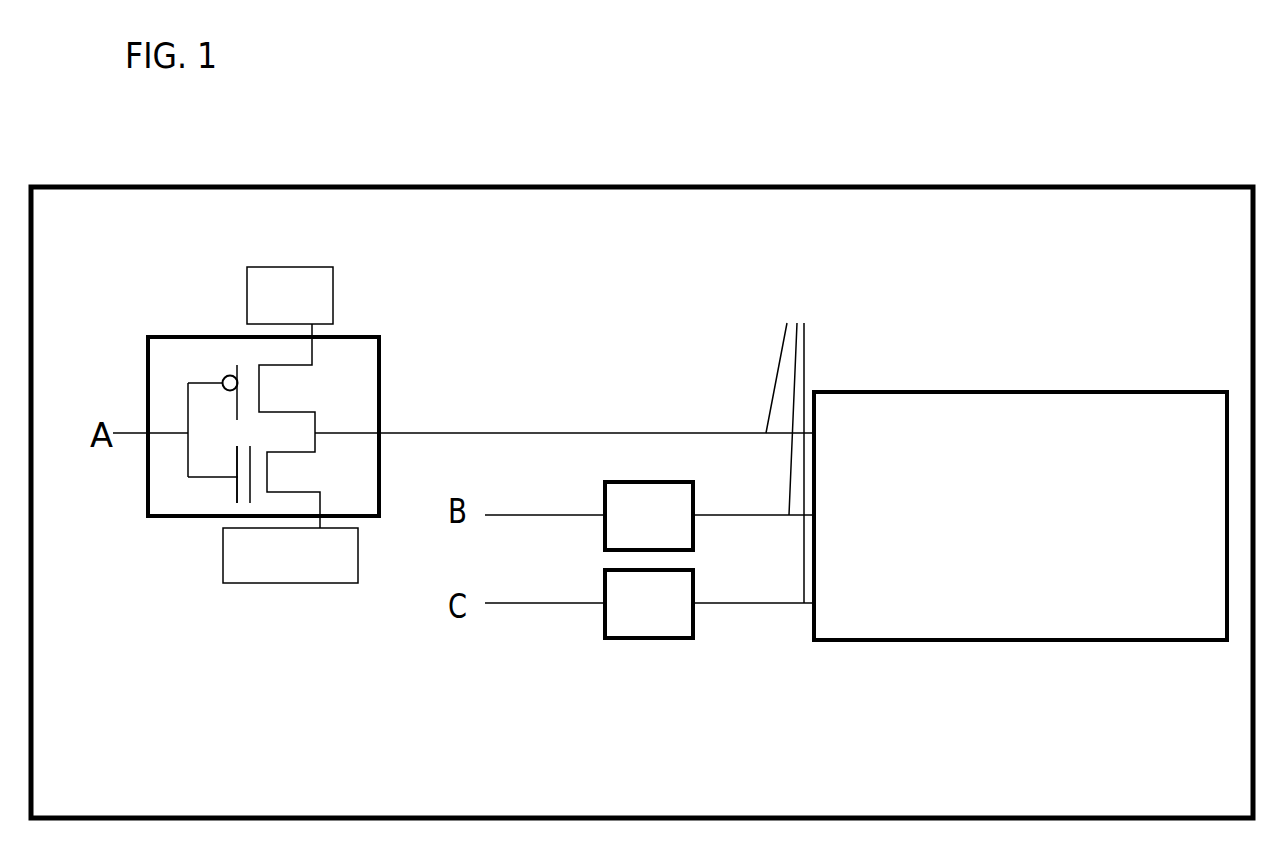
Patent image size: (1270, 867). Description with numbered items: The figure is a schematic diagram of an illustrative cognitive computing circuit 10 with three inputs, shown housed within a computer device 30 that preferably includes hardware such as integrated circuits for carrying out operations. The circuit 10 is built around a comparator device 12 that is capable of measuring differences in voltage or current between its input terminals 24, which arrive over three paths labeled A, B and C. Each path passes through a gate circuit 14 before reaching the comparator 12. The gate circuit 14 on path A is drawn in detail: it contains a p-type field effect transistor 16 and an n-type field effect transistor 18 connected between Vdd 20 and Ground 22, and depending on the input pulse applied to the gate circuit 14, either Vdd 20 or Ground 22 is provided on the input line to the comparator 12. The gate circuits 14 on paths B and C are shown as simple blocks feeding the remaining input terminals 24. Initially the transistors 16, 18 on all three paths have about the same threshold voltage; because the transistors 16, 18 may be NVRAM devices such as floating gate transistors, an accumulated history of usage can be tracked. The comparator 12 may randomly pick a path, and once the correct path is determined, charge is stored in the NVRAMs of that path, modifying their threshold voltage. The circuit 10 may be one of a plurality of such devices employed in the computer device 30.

The cognitive computing circuit 10 is at (927, 373).
The comparator device 12 is at (1020, 516).
The gate circuit 14 is at (379, 375).
The p-type field effect transistor 16 is at (224, 377).
The n-type field effect transistor 18 is at (237, 480).
The Vdd 20 is at (333, 295).
The Ground 22 is at (318, 583).
The input terminals 24 is at (792, 441).
The computer device 30 is at (642, 502).